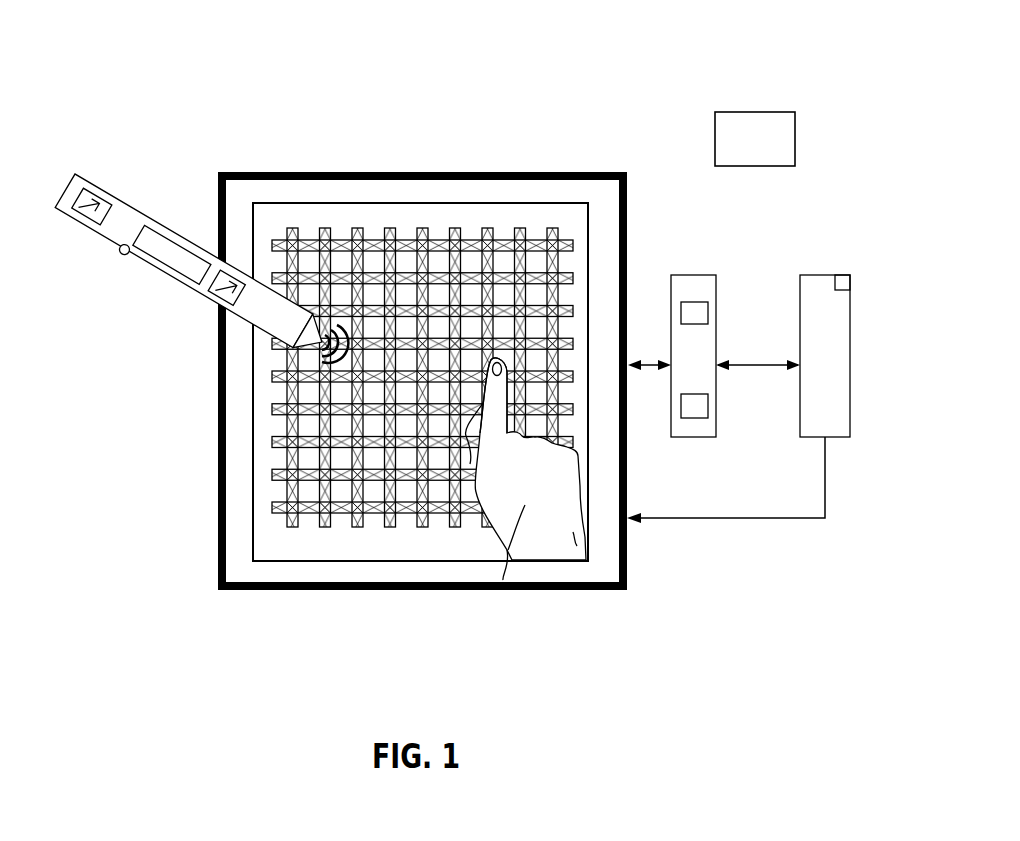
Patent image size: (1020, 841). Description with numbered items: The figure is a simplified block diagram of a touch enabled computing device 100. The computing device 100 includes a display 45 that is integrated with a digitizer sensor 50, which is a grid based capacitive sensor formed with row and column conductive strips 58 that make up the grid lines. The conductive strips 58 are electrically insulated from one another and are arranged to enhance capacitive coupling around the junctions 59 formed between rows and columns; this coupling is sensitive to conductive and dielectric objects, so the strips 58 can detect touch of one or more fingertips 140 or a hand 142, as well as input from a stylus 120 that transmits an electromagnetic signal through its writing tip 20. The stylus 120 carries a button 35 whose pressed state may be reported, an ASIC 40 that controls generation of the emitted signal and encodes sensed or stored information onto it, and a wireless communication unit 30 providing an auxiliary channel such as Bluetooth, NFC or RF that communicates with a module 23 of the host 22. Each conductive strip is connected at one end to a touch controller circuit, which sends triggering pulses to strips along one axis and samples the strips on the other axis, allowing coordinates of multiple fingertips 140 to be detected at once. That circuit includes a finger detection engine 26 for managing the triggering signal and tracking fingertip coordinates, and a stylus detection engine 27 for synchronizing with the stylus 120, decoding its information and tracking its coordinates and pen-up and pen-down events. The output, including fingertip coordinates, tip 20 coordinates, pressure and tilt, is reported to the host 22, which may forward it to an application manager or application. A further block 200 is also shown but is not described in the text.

The computing device 100 is at (417, 82).
The display 45 is at (548, 173).
The digitizer sensor 50 is at (630, 200).
The conductive strips 58 is at (353, 372).
The junctions 59 is at (384, 480).
The hand 142 is at (501, 521).
The fingertip 140 is at (487, 385).
The stylus 120 is at (186, 264).
The wireless communication unit 30 is at (92, 206).
The button 35 is at (125, 250).
The ASIC 40 is at (172, 254).
The tip 20 is at (310, 343).
The finger detection engine 26 is at (708, 313).
The stylus detection engine 27 is at (708, 412).
The host 22 is at (855, 319).
The module 23 is at (842, 293).
The external device 200 is at (797, 123).